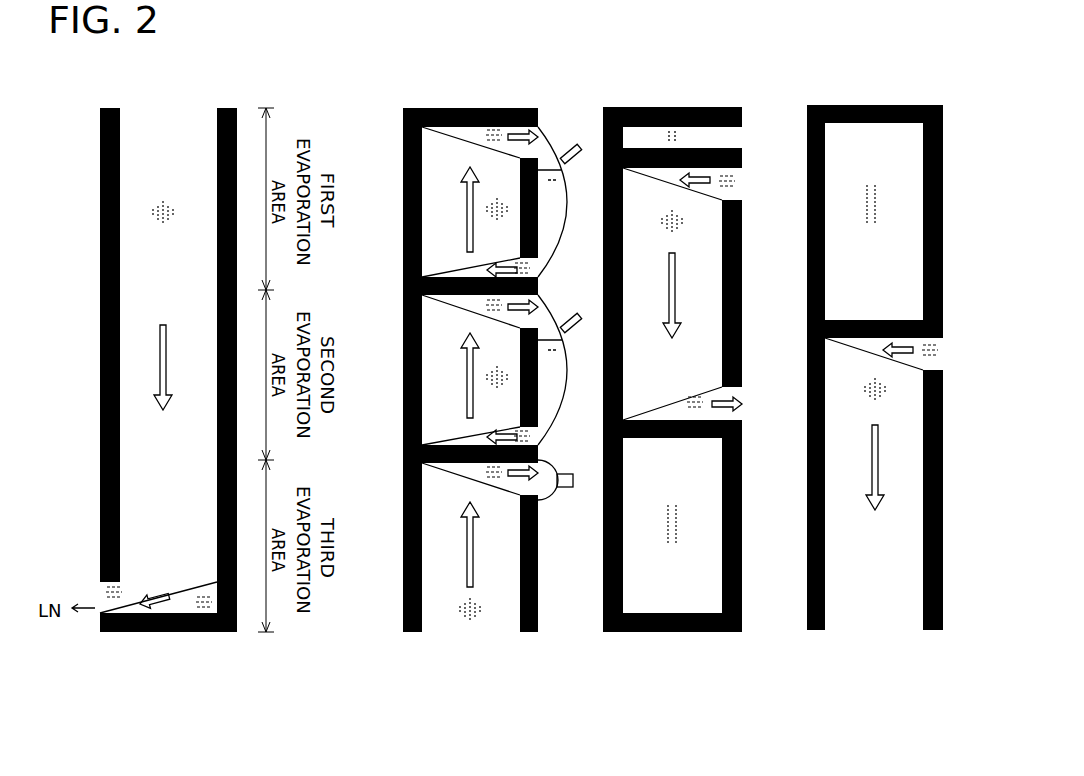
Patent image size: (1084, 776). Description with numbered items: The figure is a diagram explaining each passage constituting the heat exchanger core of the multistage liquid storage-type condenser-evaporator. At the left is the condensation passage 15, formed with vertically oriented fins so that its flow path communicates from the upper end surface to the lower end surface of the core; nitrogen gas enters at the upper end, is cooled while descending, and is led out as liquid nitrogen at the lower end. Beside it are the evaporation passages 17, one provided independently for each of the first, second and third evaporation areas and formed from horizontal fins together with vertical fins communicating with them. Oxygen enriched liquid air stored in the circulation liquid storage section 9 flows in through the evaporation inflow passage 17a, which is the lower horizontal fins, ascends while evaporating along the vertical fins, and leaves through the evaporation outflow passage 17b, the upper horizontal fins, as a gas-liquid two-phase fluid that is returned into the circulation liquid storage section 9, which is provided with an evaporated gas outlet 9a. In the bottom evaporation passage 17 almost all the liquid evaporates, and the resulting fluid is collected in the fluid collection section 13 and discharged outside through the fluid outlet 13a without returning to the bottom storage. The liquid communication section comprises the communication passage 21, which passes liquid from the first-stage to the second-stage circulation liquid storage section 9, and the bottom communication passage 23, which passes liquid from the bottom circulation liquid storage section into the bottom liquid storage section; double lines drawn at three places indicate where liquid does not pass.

The condensation passage 15 is at (160, 120).
The evaporation passage 17 is at (432, 191).
The evaporation inflow passage 17a is at (538, 262).
The evaporation outflow passage 17b is at (540, 128).
The circulation liquid storage section 9 is at (566, 205).
The evaporated gas outlet 9a is at (578, 148).
The fluid collection section 13 is at (536, 487).
The fluid outlet 13a is at (572, 486).
The communication passage 21 is at (703, 262).
The bottom communication passage 23 is at (900, 617).